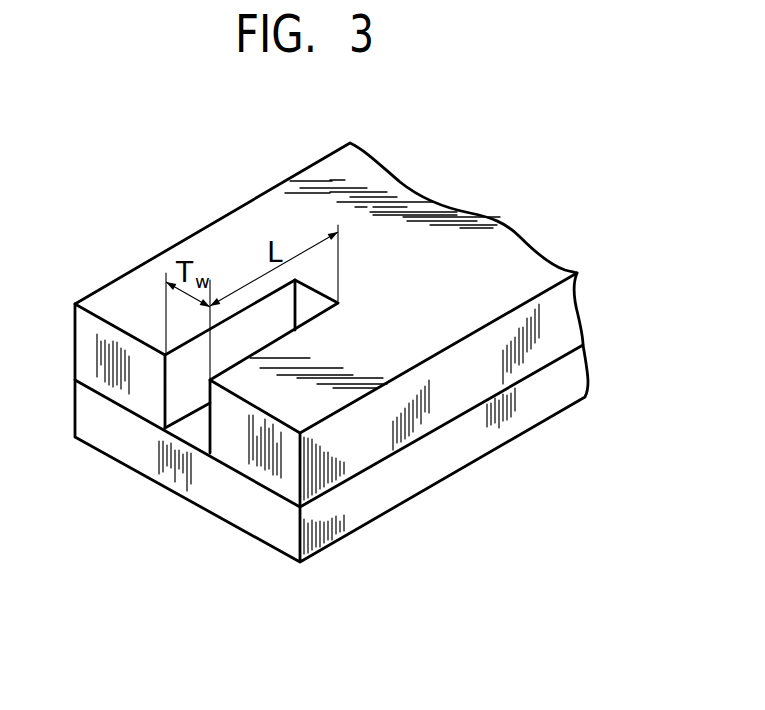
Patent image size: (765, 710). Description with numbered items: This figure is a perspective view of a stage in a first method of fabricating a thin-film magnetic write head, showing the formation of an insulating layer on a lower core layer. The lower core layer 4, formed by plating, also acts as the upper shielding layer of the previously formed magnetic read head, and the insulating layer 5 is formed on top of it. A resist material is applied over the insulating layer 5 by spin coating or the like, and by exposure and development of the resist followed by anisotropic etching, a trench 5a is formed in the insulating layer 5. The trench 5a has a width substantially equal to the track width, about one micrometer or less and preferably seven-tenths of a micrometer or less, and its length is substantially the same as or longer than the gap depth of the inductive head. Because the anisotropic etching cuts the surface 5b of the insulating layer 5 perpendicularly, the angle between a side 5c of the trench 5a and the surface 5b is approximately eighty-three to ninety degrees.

The lower core layer 4 is at (558, 383).
The insulating layer 5 is at (553, 323).
The trench 5a is at (193, 420).
The surface of the insulating layer 5b is at (470, 270).
The side of the trench 5c is at (262, 322).